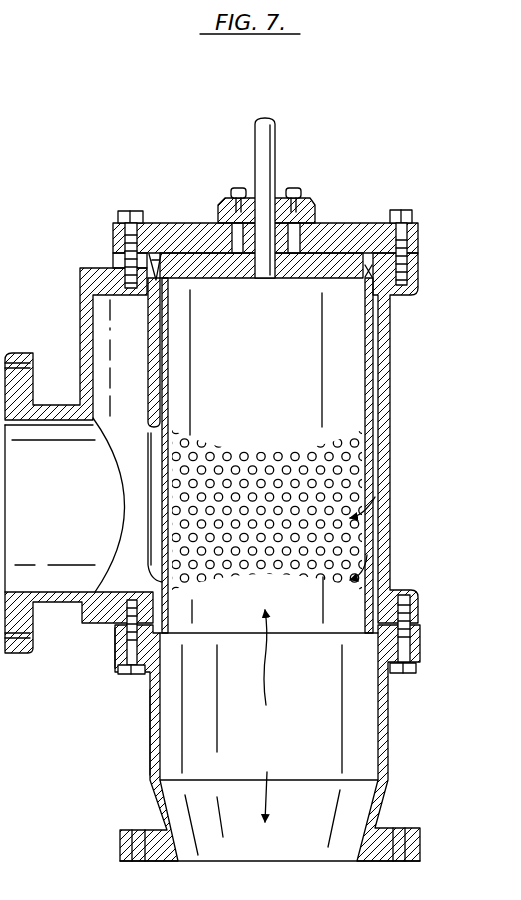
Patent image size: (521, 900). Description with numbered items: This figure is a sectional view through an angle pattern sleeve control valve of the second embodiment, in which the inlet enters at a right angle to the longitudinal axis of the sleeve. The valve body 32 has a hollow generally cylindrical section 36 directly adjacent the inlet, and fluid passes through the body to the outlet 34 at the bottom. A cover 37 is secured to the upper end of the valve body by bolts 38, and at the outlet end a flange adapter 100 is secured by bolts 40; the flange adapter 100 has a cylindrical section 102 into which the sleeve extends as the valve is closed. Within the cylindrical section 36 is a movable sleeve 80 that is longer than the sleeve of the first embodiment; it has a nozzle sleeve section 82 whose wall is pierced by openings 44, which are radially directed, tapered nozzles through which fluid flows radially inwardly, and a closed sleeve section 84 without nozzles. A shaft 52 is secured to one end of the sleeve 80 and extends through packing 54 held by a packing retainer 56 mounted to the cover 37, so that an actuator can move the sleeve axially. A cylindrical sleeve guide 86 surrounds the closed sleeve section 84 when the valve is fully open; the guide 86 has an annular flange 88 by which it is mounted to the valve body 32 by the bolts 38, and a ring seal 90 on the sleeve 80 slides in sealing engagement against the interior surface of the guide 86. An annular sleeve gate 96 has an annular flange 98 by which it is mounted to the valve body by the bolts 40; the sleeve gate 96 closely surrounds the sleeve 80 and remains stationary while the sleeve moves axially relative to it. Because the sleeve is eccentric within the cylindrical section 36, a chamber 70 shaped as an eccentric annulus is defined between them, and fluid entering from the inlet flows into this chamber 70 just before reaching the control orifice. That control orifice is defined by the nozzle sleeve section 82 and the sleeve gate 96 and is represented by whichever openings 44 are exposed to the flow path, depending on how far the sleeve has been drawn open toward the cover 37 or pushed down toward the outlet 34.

The valve body 32 is at (80, 310).
The outlet 34 is at (266, 716).
The hollow generally cylindrical section 36 is at (392, 520).
The cover 37 is at (113, 228).
The bolts 38 is at (140, 212).
The bolts 40 is at (122, 677).
The openings 44 is at (281, 453).
The shaft 52 is at (272, 137).
The packing 54 is at (315, 200).
The packing retainer 56 is at (300, 197).
The chamber 70 is at (137, 465).
The sleeve 80 is at (350, 458).
The nozzle sleeve section 82 is at (190, 520).
The closed sleeve section 84 is at (168, 370).
The cylindrical sleeve guide 86 is at (148, 353).
The annular flange 88 is at (115, 262).
The ring seal 90 is at (160, 263).
The annular sleeve gate 96 is at (183, 582).
The annular flange 98 is at (115, 630).
The flange adapter 100 is at (148, 778).
The cylindrical section 102 is at (150, 733).